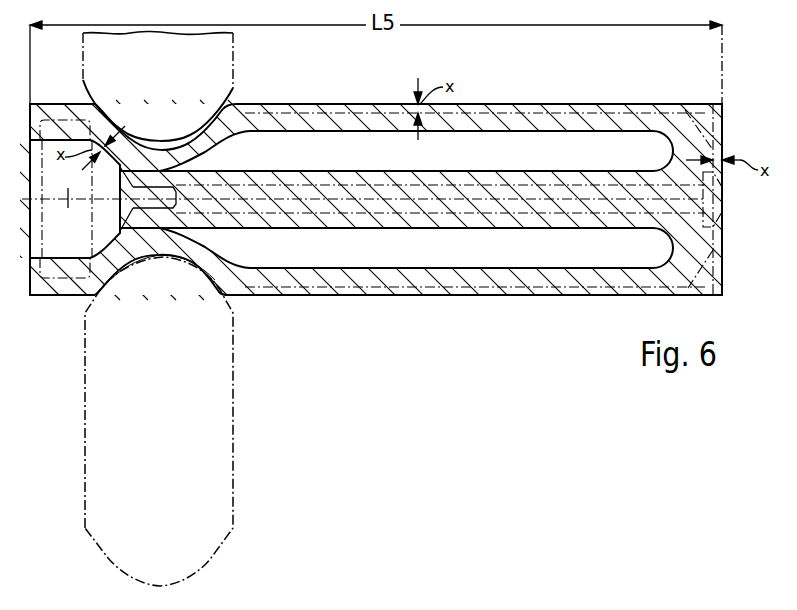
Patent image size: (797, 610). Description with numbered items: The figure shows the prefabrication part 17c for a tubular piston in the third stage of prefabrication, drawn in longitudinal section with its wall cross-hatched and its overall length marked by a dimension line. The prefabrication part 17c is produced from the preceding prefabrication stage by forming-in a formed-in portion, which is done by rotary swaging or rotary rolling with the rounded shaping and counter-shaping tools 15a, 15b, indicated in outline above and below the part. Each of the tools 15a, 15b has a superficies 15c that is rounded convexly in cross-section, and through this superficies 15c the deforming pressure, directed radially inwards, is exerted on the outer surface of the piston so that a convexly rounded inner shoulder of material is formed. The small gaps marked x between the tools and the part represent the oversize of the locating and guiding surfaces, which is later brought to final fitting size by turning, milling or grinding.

The shaping tool 15a is at (100, 70).
The counter-shaping tool 15b is at (102, 453).
The superficies 15c is at (177, 266).
The prefabrication part 17c is at (520, 103).